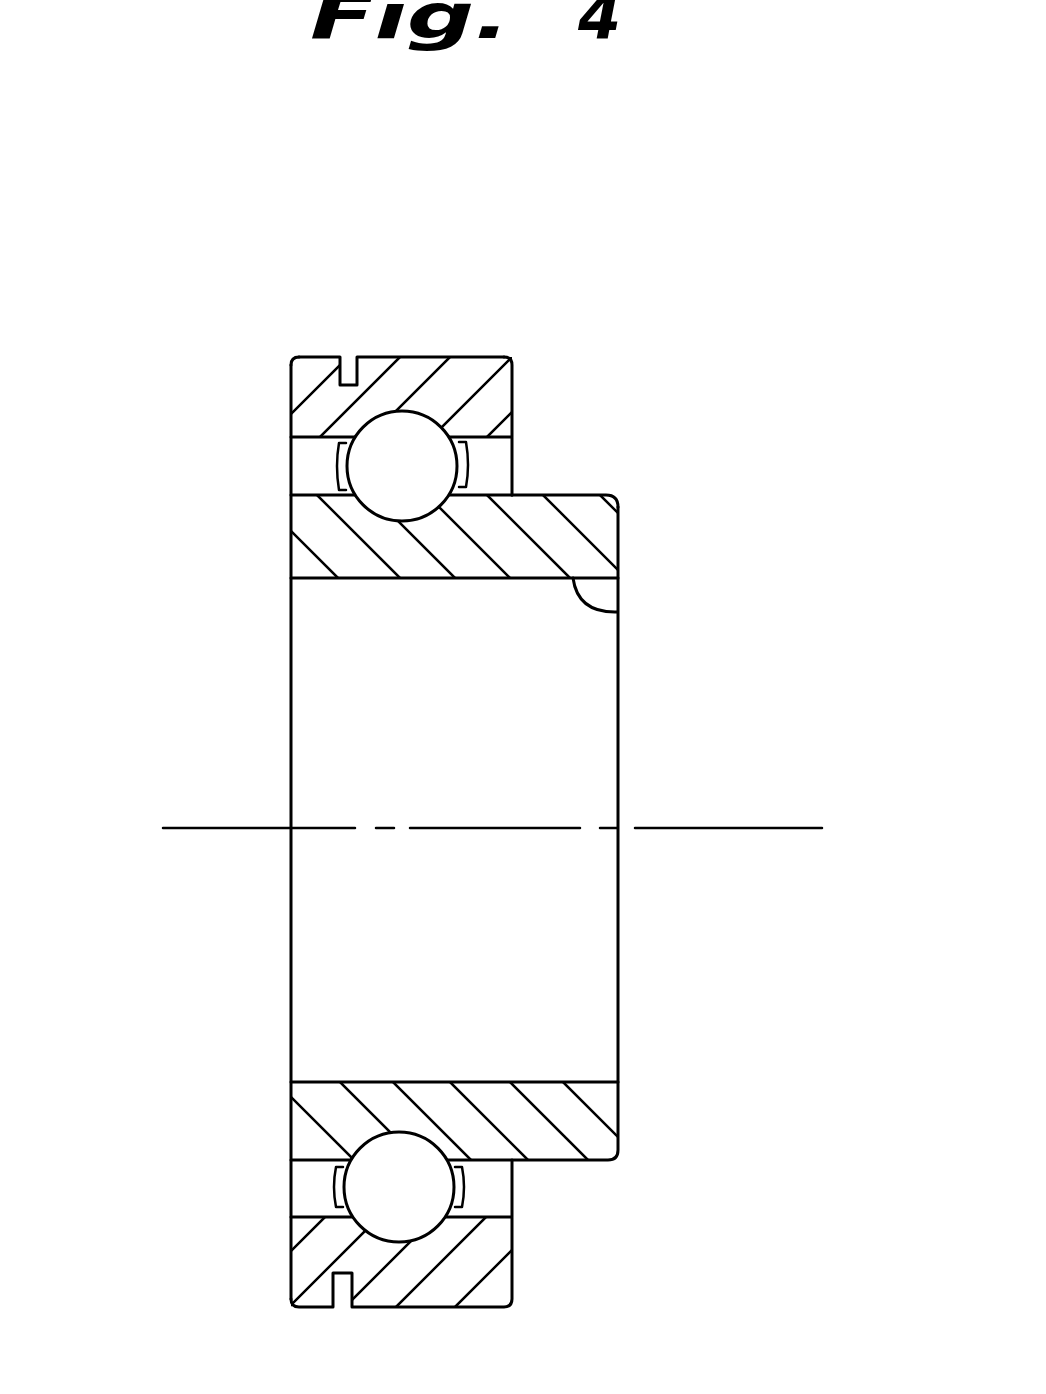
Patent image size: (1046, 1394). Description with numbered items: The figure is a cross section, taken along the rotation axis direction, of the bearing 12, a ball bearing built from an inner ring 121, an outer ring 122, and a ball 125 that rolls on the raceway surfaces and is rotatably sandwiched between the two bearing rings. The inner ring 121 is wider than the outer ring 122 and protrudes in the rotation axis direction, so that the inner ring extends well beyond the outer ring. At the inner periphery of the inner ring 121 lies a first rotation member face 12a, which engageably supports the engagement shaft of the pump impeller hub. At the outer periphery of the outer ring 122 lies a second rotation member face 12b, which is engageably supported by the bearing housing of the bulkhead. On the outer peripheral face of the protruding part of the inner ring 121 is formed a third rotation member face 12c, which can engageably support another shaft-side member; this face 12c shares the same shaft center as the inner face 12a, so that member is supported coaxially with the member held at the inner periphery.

The bearing 12 is at (681, 263).
The first rotation member face 12a is at (618, 612).
The second rotation member face 12b is at (414, 357).
The third rotation member face 12c is at (567, 495).
The inner ring 121 is at (322, 522).
The outer ring 122 is at (317, 407).
The ball 125 is at (380, 462).